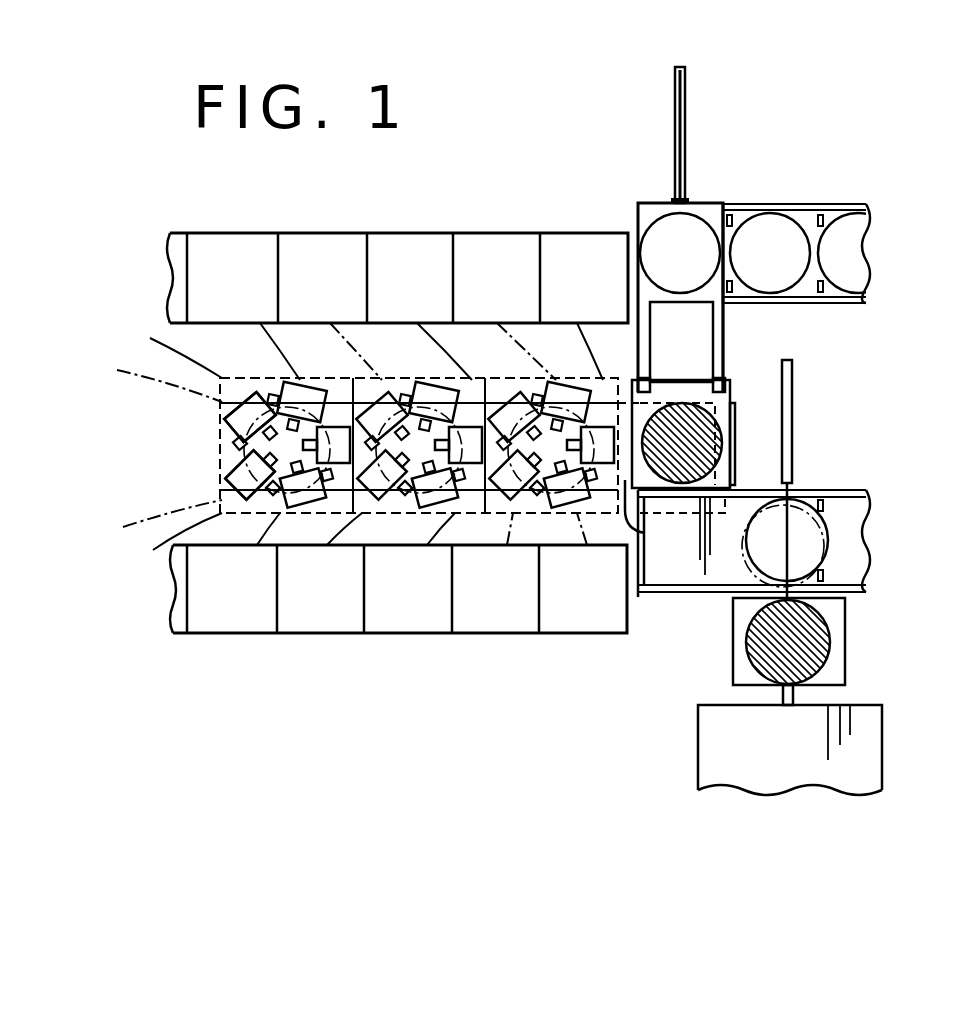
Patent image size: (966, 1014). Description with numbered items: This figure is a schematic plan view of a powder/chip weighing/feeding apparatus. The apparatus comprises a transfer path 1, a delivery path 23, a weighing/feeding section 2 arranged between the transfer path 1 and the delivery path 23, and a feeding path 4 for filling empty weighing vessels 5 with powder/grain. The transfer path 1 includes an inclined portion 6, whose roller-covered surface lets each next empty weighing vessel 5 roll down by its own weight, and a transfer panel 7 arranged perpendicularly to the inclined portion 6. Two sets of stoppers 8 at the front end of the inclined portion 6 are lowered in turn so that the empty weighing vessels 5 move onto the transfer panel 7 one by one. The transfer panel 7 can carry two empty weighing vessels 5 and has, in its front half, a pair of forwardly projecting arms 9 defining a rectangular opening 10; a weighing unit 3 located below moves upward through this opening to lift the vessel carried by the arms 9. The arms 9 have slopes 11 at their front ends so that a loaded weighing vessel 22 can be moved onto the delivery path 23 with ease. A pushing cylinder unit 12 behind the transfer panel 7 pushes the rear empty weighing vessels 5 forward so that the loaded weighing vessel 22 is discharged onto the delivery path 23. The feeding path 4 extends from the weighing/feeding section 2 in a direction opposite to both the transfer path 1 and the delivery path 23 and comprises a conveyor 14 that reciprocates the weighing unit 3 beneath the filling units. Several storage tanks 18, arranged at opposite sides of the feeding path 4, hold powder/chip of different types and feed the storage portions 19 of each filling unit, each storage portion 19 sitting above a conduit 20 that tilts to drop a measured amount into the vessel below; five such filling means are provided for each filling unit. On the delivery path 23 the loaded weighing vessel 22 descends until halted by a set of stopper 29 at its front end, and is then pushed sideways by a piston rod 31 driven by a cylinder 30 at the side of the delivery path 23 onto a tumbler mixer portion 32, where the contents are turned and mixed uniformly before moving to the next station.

The transfer path 1 is at (739, 182).
The weighing/feeding section 2 is at (750, 420).
The weighing unit 3 is at (736, 471).
The feeding path 4 is at (464, 528).
The empty weighing vessels 5 is at (850, 236).
The inclined portion 6 is at (813, 206).
The transfer panel 7 is at (641, 220).
The stoppers 8 is at (731, 305).
The forwardly projecting arms 9 is at (722, 346).
The rectangular opening 10 is at (660, 320).
The slopes 11 is at (723, 382).
The pushing cylinder unit 12 is at (686, 93).
The conveyor 14 is at (640, 533).
The storage tanks 18 is at (228, 252).
The storage portions 19 is at (236, 421).
The conduit 20 is at (238, 463).
The loaded weighing vessel 22 is at (812, 628).
The delivery path 23 is at (877, 513).
The stopper 29 is at (826, 574).
The cylinder 30 is at (793, 376).
The piston rod 31 is at (828, 548).
The tumbler mixer portion 32 is at (860, 687).